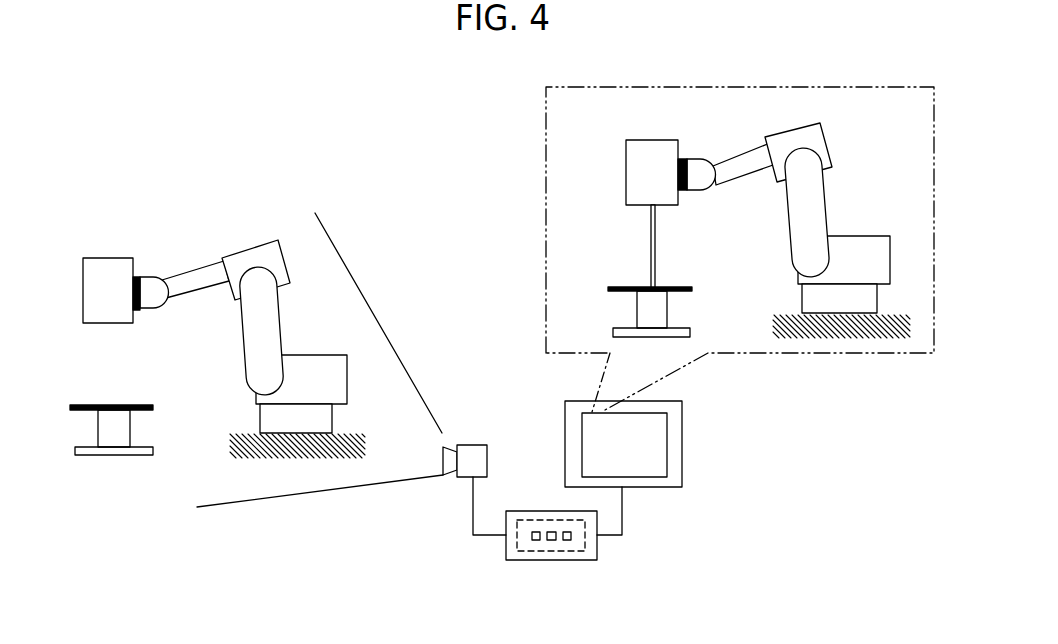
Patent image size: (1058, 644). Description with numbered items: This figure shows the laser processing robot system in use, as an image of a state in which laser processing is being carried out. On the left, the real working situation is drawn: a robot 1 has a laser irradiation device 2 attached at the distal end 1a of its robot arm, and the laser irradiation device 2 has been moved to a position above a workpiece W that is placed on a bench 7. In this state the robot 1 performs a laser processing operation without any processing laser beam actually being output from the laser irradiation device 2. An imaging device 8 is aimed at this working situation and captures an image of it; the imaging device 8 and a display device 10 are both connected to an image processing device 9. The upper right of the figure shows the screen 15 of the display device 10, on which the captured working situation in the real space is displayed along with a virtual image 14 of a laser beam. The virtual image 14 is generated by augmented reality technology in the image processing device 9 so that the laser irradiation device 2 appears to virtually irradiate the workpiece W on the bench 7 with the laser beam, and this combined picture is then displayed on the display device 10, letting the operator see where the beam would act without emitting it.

The robot 1 is at (286, 325).
The distal end of robot arm 1a is at (143, 292).
The laser irradiation device 2 is at (105, 258).
The bench 7 is at (132, 428).
The workpiece W is at (148, 405).
The imaging device 8 is at (463, 478).
The image processing device 9 is at (576, 560).
The display device 10 is at (682, 446).
The virtual image of a laser beam 14 is at (650, 247).
The screen 15 is at (545, 138).